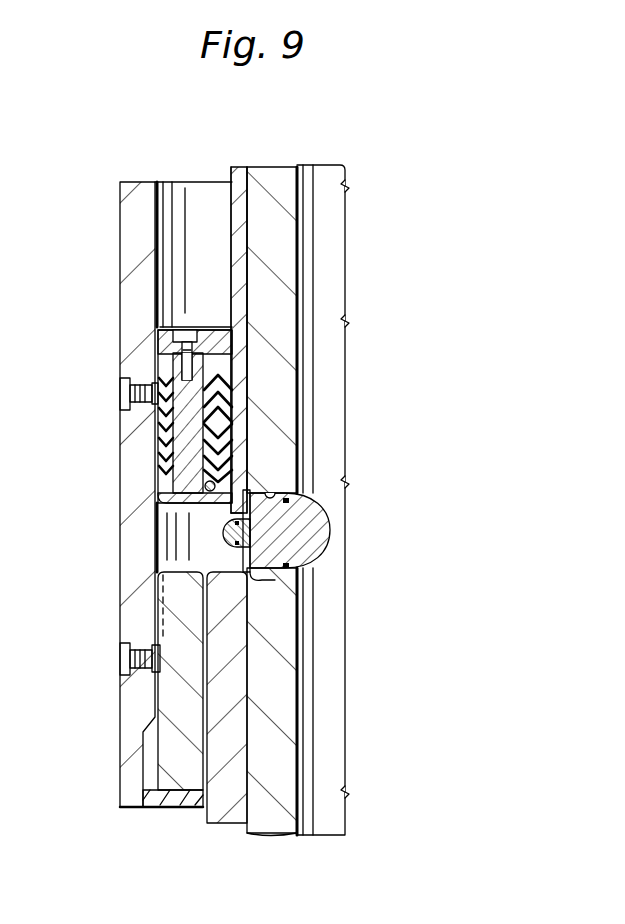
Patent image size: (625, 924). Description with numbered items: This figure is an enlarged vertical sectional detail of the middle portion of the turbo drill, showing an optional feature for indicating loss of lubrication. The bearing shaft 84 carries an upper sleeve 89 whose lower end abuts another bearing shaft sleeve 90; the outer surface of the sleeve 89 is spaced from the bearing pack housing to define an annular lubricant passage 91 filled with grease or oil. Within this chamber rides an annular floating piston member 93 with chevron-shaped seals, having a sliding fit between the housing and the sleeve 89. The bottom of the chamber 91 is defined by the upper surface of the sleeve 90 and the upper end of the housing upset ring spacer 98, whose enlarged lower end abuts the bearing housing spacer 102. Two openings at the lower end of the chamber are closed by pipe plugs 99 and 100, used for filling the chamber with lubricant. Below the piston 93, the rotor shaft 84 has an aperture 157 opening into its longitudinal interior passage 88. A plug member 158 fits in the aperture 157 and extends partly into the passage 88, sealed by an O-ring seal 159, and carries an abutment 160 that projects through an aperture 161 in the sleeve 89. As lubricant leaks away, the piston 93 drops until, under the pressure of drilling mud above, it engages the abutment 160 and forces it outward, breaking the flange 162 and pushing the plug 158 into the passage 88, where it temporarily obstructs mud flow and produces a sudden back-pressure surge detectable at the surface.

The bearing shaft 84 is at (282, 378).
The longitudinal interior passage 88 is at (300, 740).
The upper sleeve 89 is at (234, 204).
The bearing shaft sleeve 90 is at (233, 617).
The annular passage 91 is at (180, 227).
The piston member 93 is at (157, 483).
The housing upset ring spacer 98 is at (162, 702).
The pipe plug 99 is at (125, 393).
The pipe plug 100 is at (125, 650).
The bearing housing spacer 102 is at (168, 810).
The aperture 157 is at (270, 497).
The plug member 158 is at (293, 513).
The O-ring seal 159 is at (331, 522).
The abutment 160 is at (225, 520).
The aperture 161 is at (225, 545).
The flange 162 is at (292, 574).